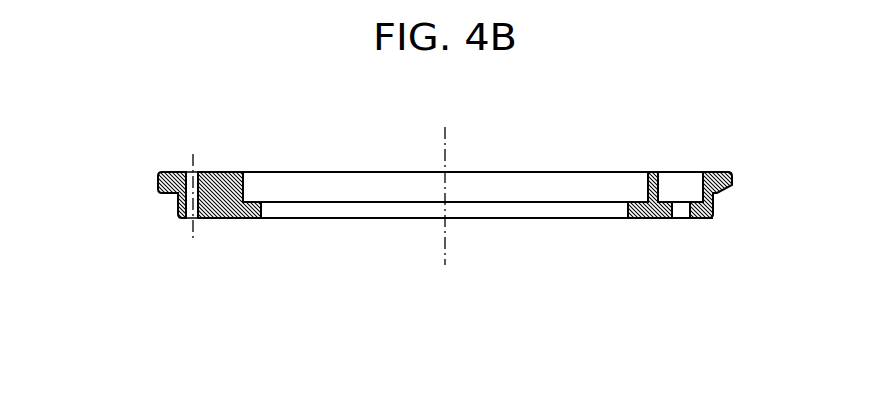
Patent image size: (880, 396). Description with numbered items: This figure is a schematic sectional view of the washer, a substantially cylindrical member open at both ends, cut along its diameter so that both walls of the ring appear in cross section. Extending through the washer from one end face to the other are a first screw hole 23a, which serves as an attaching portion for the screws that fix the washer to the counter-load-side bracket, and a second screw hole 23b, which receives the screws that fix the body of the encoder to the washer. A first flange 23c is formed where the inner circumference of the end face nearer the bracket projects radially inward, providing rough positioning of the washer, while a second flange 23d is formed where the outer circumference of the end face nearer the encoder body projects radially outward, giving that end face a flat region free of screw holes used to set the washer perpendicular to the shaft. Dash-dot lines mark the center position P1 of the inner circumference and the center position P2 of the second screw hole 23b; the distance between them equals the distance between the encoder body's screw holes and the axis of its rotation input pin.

The first screw hole 23a is at (702, 192).
The second screw hole 23b is at (197, 189).
The first flange 23c is at (250, 224).
The second flange 23d is at (152, 177).
The center position P1 is at (442, 213).
The center position P2 is at (191, 212).